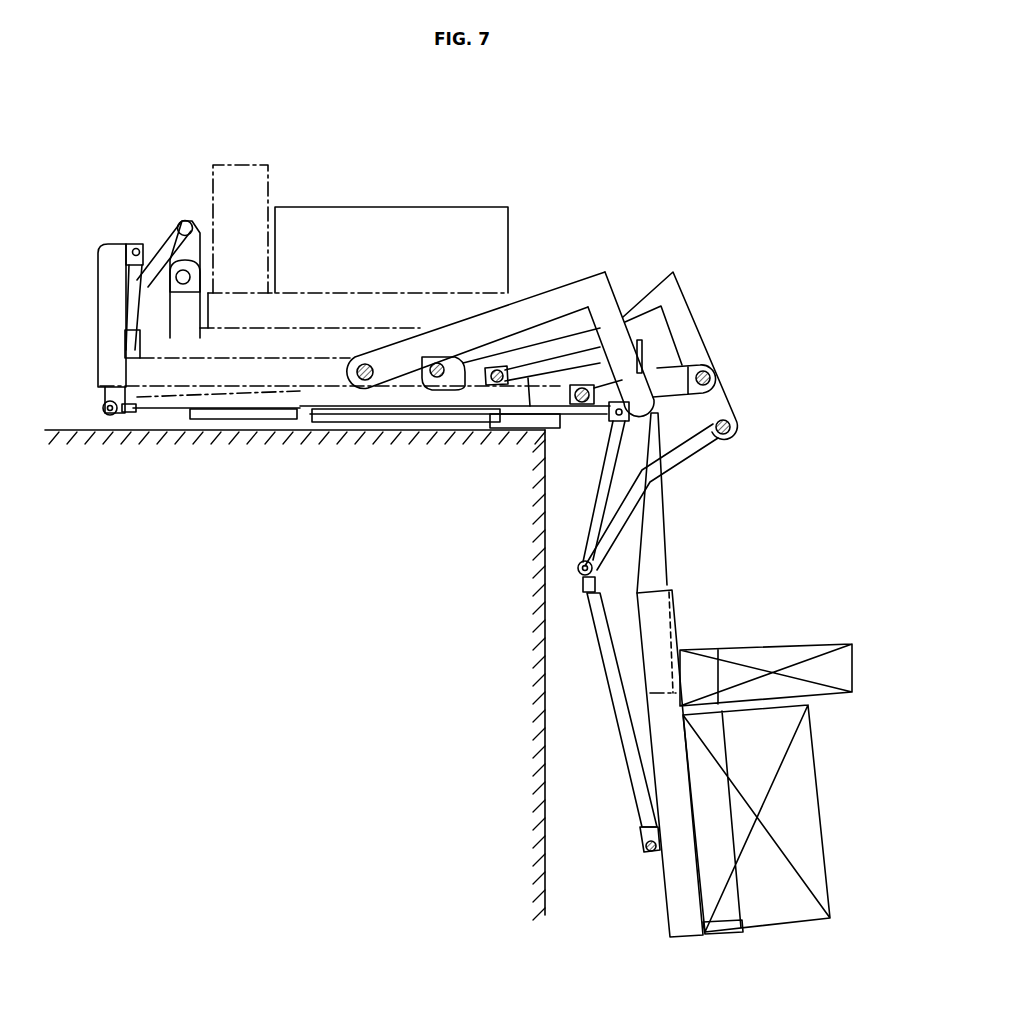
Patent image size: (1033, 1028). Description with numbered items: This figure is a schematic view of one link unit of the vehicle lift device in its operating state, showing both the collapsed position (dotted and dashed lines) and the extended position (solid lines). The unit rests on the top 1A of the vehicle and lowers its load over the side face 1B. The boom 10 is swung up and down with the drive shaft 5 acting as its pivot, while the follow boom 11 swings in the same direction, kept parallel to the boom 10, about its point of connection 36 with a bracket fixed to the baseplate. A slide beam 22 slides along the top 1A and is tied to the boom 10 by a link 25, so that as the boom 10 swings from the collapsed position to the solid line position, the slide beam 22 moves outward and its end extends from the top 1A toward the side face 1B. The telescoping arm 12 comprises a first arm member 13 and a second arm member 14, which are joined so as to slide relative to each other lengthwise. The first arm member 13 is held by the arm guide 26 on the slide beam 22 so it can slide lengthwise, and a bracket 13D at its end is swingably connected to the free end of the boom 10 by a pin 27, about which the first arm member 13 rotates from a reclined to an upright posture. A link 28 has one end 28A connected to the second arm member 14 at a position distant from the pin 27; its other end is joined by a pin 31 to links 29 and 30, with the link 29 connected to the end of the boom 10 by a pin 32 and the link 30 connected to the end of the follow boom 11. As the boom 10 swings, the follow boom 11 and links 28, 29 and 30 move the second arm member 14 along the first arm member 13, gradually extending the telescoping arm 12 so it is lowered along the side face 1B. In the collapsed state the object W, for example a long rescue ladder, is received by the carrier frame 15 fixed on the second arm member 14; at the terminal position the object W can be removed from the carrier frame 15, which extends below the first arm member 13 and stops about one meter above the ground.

The top of the vehicle 1A is at (70, 428).
The side face of the vehicle 1B is at (547, 694).
The drive shaft 5 is at (424, 386).
The boom 10 is at (180, 221).
The follow boom 11 is at (106, 246).
The telescoping arm 12 is at (368, 327).
The first arm member 13 is at (653, 535).
The bracket 13D is at (678, 373).
The second arm member 14 is at (668, 910).
The carrier frame 15 is at (330, 293).
The slide beam 22 is at (246, 420).
The link 25 is at (530, 384).
The arm guide 26 is at (610, 352).
The pin 27 is at (714, 378).
The link 28 is at (615, 740).
The end of link 28A is at (643, 848).
The link 29 is at (710, 443).
The link 30 is at (598, 483).
The pin 31 is at (578, 569).
The pin 32 is at (735, 427).
The point of connection 36 is at (362, 382).
The object W is at (253, 165).